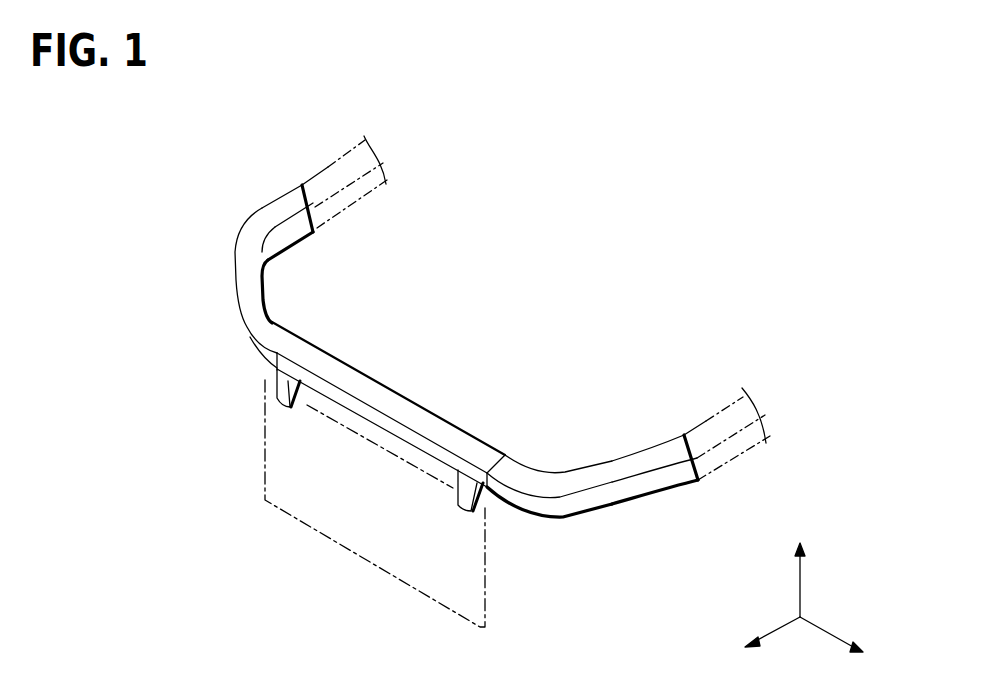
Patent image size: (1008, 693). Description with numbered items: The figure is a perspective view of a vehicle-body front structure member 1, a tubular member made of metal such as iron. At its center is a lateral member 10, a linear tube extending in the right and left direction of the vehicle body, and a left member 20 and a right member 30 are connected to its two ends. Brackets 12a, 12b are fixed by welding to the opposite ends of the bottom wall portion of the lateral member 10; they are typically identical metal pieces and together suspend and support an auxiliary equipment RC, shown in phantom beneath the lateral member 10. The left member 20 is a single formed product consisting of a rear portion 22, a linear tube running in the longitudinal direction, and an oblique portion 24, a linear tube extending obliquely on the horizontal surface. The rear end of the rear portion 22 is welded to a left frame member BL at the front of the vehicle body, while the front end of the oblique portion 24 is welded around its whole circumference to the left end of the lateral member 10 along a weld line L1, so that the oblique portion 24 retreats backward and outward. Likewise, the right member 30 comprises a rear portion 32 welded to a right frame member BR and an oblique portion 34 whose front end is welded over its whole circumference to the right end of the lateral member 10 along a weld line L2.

The vehicle-body front structure member 1 is at (517, 288).
The lateral member 10 is at (400, 373).
The bracket 12a is at (455, 492).
The bracket 12b is at (266, 379).
The left member 20 is at (638, 542).
The rear portion 22 is at (662, 452).
The oblique portion 24 is at (588, 478).
The right member 30 is at (230, 263).
The rear portion 32 is at (271, 213).
The oblique portion 34 is at (252, 284).
The right frame member BR is at (345, 155).
The left frame member BL is at (698, 420).
The auxiliary equipment RC is at (278, 465).
The weld line L1 is at (498, 450).
The weld line L2 is at (297, 338).